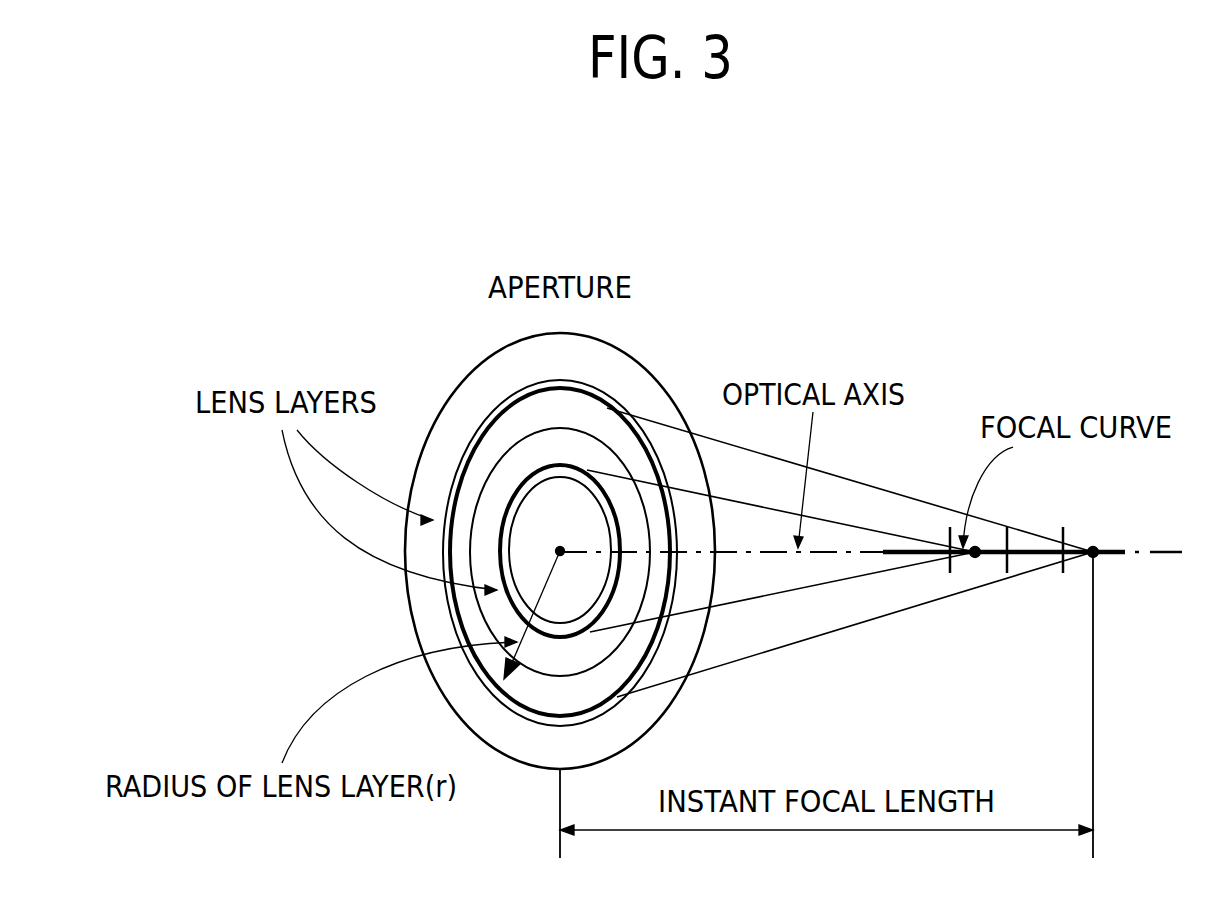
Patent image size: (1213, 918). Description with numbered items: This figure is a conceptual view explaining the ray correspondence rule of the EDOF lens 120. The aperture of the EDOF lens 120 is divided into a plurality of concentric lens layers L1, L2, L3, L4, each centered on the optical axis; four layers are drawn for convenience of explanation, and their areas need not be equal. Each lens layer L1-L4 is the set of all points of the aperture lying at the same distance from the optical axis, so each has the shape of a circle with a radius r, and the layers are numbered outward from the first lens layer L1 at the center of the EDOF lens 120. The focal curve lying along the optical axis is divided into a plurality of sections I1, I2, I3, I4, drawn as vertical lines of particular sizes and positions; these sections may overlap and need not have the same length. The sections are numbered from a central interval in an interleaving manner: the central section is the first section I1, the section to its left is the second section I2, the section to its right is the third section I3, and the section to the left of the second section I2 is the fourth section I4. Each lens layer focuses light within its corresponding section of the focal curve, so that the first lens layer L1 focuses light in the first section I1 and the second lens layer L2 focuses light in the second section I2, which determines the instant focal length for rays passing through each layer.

The EDOF lens 120 is at (642, 368).
The first lens layer L1 is at (560, 551).
The second lens layer L2 is at (560, 552).
The third lens layer L3 is at (560, 552).
The fourth lens layer L4 is at (560, 532).
The first section I1 is at (1024, 540).
The second section I2 is at (978, 532).
The third section I3 is at (1091, 532).
The fourth section I4 is at (926, 540).